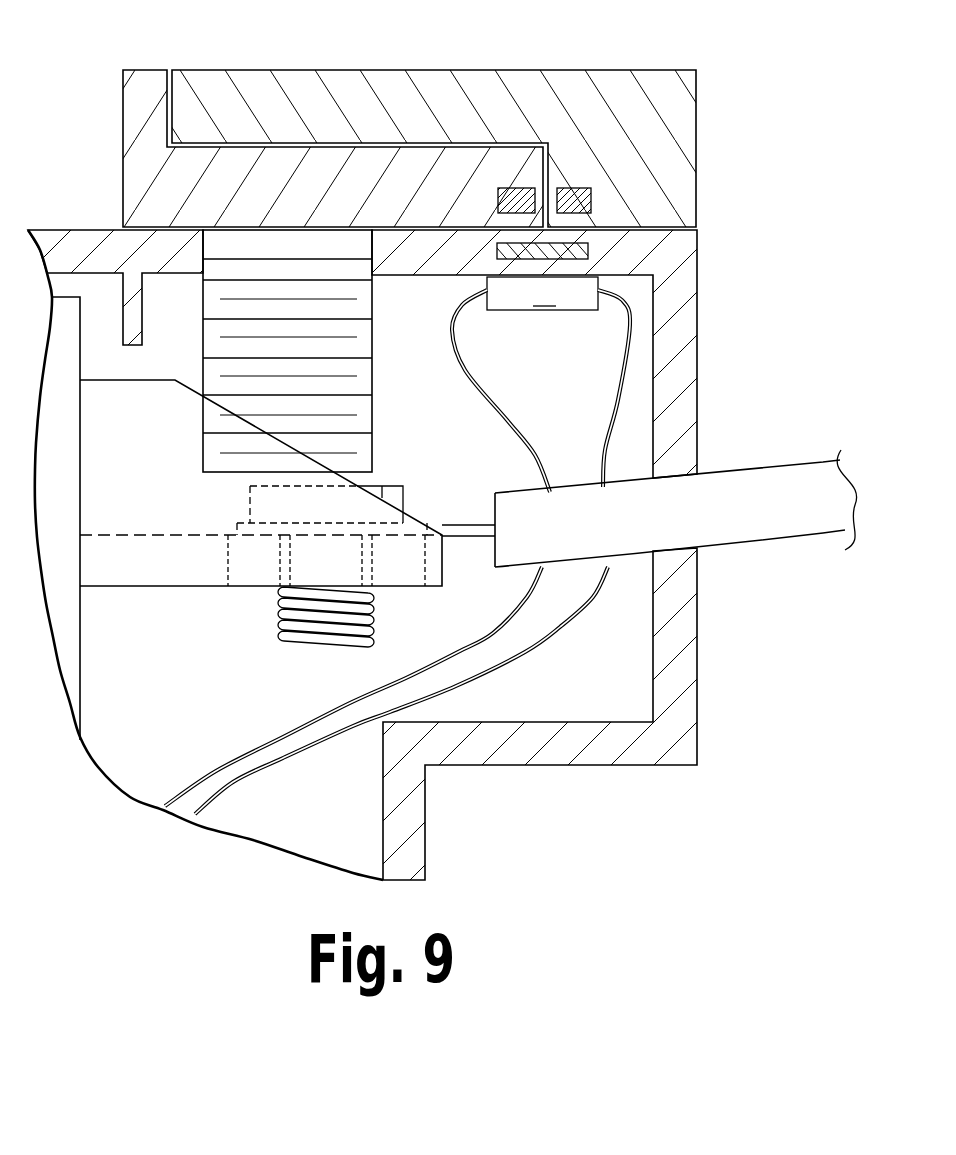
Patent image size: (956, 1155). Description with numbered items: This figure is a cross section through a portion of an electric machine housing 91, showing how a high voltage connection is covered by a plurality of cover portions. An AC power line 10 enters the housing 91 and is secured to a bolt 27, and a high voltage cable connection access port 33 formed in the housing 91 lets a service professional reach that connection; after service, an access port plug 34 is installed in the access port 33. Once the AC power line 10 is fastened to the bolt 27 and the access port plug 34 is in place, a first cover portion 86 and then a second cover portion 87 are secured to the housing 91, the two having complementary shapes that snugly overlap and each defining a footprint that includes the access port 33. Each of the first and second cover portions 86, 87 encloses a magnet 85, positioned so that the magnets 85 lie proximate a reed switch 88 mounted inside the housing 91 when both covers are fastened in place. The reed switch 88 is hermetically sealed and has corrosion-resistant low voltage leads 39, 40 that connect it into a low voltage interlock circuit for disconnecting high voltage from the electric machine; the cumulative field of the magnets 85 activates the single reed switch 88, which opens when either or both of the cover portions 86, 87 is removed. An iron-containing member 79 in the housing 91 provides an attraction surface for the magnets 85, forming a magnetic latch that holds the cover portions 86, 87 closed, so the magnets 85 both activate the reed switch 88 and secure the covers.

The AC power line 10 is at (755, 528).
The bolt 27 is at (283, 623).
The high voltage cable connection access port 33 is at (205, 250).
The access port plug 34 is at (363, 332).
The low voltage lead 39 is at (617, 373).
The low voltage lead 40 is at (513, 420).
The iron-containing member 79 is at (593, 253).
The magnet 85 is at (518, 190).
The first cover portion 86 is at (147, 77).
The second cover portion 87 is at (603, 78).
The reed switch 88 is at (542, 293).
The housing 91 is at (670, 252).